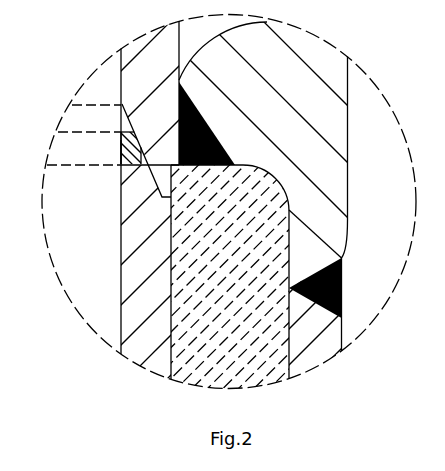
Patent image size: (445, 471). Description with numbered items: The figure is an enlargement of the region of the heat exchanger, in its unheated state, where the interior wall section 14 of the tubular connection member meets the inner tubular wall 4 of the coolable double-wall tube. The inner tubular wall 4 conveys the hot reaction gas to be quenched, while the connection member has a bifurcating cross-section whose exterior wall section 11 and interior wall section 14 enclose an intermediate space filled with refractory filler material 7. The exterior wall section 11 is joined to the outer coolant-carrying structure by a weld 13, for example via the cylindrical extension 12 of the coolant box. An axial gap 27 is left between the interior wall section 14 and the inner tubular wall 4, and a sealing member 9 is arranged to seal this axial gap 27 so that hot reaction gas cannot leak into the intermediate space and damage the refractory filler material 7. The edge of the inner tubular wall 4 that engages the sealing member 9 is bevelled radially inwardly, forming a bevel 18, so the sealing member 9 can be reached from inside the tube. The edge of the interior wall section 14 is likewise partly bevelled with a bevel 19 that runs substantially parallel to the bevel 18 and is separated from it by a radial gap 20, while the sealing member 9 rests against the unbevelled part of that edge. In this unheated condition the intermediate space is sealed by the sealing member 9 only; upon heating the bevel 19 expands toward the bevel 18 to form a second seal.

The inner tubular wall 4 is at (146, 112).
The refractory filler material 7 is at (221, 352).
The sealing member 9 is at (115, 156).
The exterior wall section 11 is at (308, 340).
The cylindrical extension 12 is at (322, 222).
The weld 13 is at (342, 283).
The interior wall section 14 is at (125, 250).
The bevel 18 is at (117, 115).
The bevel 19 is at (146, 183).
The radial gap 20 is at (141, 167).
The axial gap 27 is at (117, 126).